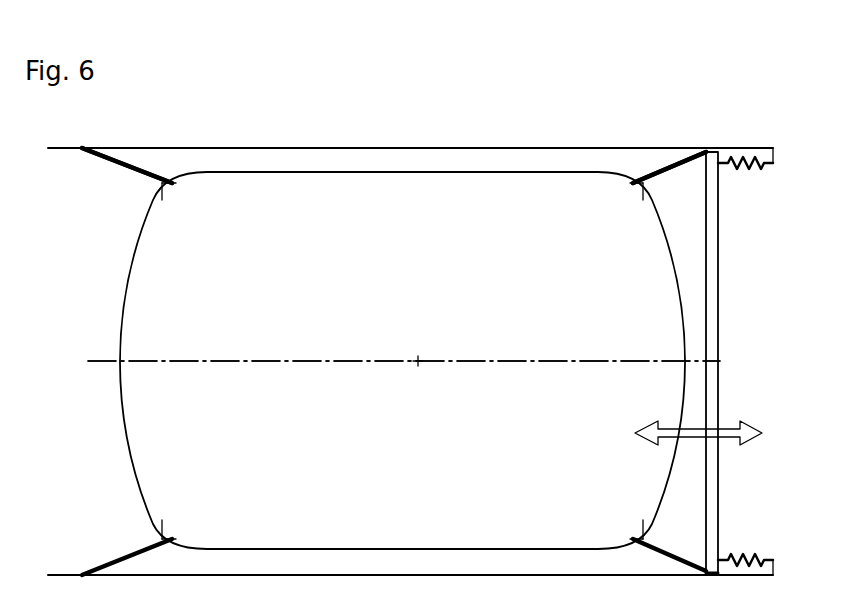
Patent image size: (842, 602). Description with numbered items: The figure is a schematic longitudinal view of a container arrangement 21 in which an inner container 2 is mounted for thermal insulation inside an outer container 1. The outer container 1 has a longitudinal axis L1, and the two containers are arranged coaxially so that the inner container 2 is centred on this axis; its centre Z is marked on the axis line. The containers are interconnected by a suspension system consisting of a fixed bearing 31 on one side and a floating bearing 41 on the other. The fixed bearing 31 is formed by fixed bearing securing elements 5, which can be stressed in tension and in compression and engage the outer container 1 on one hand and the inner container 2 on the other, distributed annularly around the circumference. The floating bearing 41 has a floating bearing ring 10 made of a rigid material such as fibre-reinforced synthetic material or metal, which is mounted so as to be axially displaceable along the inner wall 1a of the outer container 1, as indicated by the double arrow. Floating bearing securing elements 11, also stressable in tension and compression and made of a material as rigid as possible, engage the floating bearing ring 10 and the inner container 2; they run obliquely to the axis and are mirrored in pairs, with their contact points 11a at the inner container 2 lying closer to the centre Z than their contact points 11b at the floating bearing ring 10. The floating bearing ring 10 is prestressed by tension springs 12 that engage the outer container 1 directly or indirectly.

The outer container 1 is at (297, 146).
The inner wall of the outer container 1a is at (421, 151).
The inner container 2 is at (290, 175).
The fixed bearing securing elements 5 is at (118, 165).
The floating bearing ring 10 is at (720, 330).
The floating bearing securing elements 11 is at (665, 162).
The contact points of the floating bearing securing elements at the inner container 11a is at (638, 180).
The contact points of the securing elements at the floating bearing ring 11b is at (710, 556).
The tension springs 12 is at (745, 178).
The container arrangement 21 is at (440, 135).
The fixed bearing 31 is at (152, 135).
The floating bearing 41 is at (677, 138).
The centre of the inner container Z is at (404, 342).
The longitudinal axis of the outer container L1 is at (262, 338).